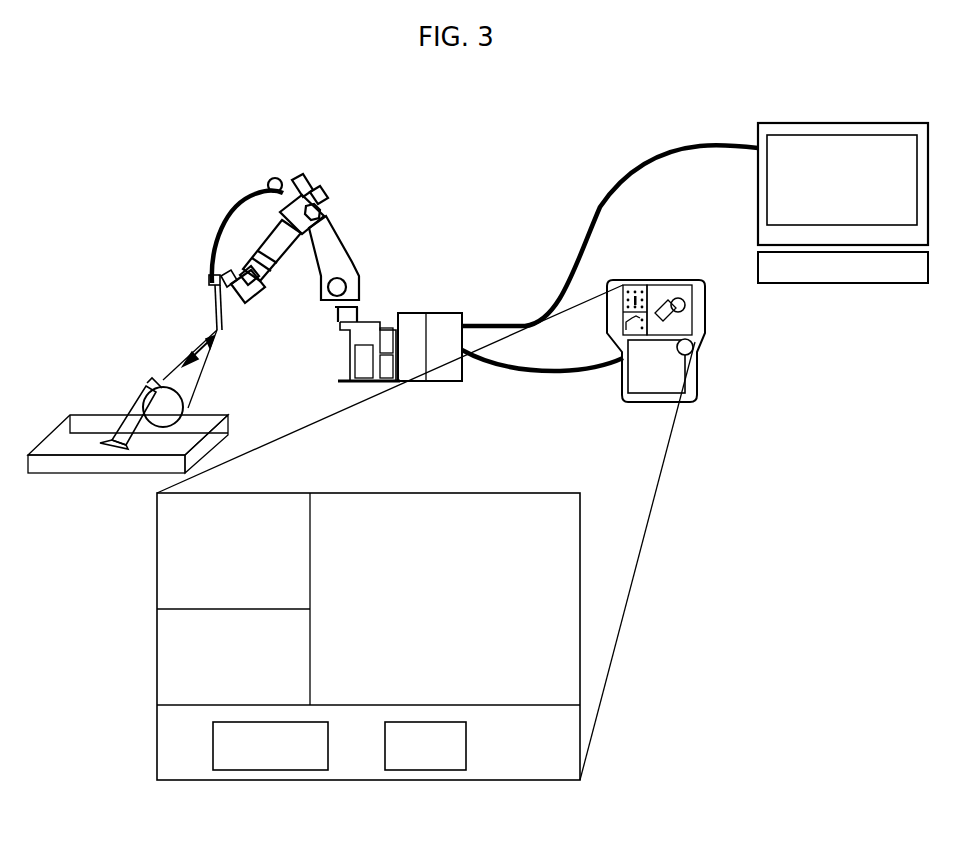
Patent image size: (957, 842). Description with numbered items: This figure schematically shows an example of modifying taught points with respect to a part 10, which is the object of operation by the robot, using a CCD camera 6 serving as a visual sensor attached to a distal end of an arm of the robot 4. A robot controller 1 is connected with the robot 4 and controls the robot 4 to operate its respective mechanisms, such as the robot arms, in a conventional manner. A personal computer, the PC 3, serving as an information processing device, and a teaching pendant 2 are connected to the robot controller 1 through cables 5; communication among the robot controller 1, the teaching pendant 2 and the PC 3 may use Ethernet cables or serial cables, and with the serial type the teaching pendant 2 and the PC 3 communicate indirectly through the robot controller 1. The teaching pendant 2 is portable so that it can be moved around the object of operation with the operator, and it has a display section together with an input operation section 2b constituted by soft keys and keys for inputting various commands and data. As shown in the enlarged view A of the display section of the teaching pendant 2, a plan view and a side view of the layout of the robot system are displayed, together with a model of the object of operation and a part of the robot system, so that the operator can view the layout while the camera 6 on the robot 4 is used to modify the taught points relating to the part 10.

The robot controller 1 is at (412, 317).
The teaching pendant 2 is at (707, 315).
The input operation section 2b is at (485, 784).
The PC 3 is at (787, 127).
The robot 4 is at (337, 255).
The cables 5 is at (598, 205).
The CCD camera 6 is at (257, 292).
The part 10 is at (148, 383).
The enlarged view A is at (135, 731).